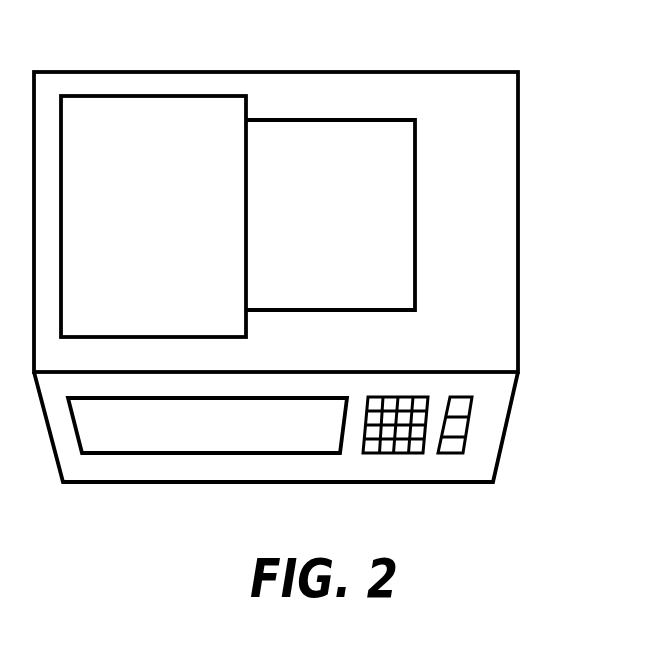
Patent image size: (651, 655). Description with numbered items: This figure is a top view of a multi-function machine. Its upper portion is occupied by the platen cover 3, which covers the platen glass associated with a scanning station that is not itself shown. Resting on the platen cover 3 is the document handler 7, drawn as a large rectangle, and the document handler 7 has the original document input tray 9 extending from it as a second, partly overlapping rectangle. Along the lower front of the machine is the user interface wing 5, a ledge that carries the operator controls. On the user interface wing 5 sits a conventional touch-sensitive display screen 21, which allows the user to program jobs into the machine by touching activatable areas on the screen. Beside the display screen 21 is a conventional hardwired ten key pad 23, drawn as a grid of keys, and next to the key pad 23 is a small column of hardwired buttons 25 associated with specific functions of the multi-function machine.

The platen cover 3 is at (519, 283).
The user interface wing 5 is at (509, 418).
The document handler 7 is at (147, 96).
The original document input tray 9 is at (312, 120).
The touch-sensitive display screen 21 is at (145, 453).
The ten key pad 23 is at (393, 453).
The function buttons 25 is at (452, 453).